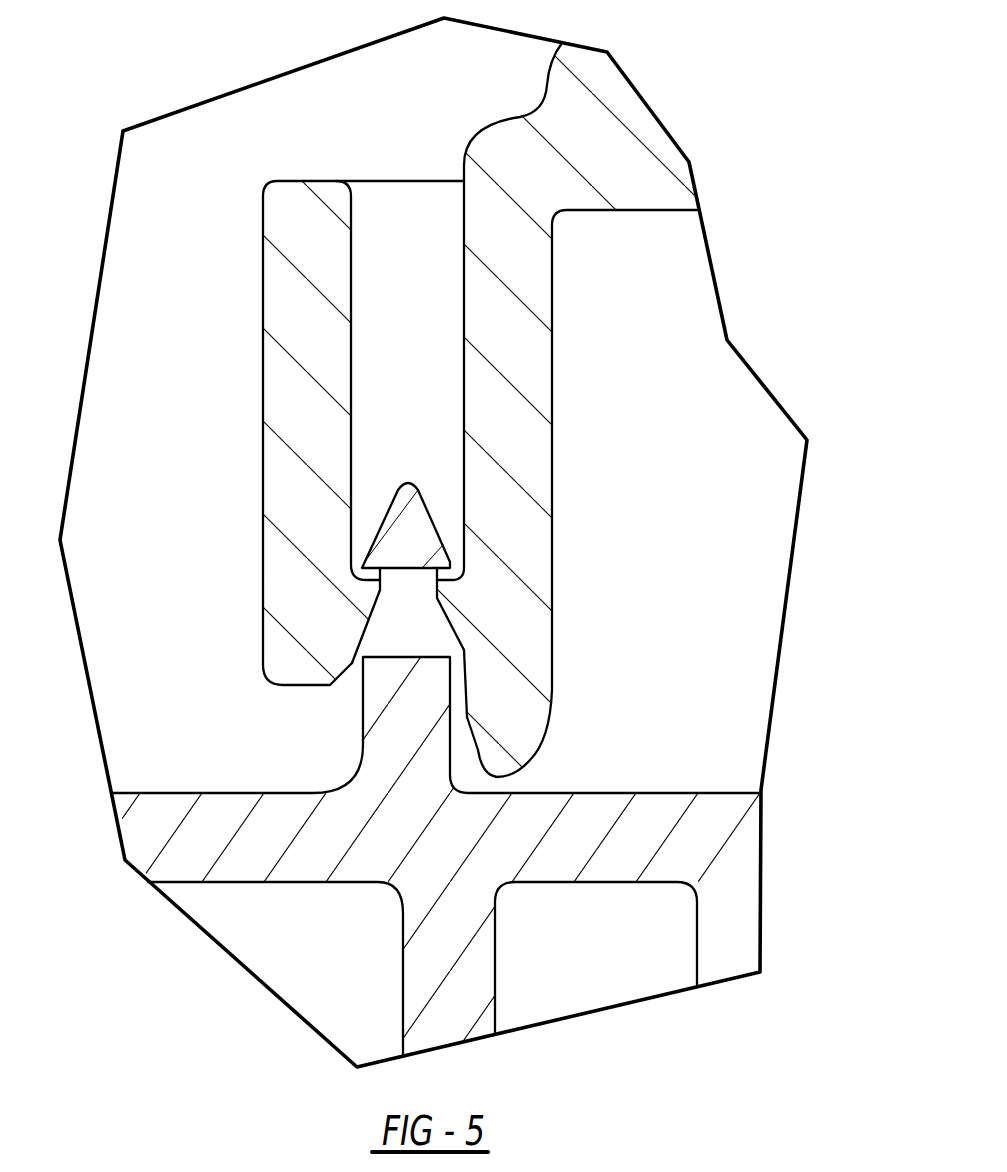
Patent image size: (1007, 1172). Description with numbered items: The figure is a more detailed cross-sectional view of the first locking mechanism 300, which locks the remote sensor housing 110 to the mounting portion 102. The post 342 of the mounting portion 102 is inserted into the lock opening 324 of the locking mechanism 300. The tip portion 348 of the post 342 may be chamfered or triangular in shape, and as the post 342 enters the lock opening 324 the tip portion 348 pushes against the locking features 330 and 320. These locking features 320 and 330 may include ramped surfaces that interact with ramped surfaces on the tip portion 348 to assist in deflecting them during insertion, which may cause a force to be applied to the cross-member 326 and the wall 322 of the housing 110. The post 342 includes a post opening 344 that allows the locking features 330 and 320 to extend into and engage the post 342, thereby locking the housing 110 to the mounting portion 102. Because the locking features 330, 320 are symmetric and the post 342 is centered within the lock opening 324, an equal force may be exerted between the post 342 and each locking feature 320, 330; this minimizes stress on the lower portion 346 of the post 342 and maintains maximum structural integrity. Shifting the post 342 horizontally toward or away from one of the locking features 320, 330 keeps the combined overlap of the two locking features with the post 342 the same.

The mounting portion 102 is at (722, 828).
The remote sensor housing 110 is at (445, 542).
The first locking mechanism 300 is at (255, 344).
The locking feature 320 is at (443, 598).
The wall 322 is at (505, 340).
The lock opening 324 is at (403, 270).
The cross-member 326 is at (302, 333).
The locking feature 330 is at (365, 658).
The post 342 is at (413, 723).
The post opening 344 is at (278, 826).
The lower portion 346 is at (510, 886).
The tip portion 348 is at (415, 523).